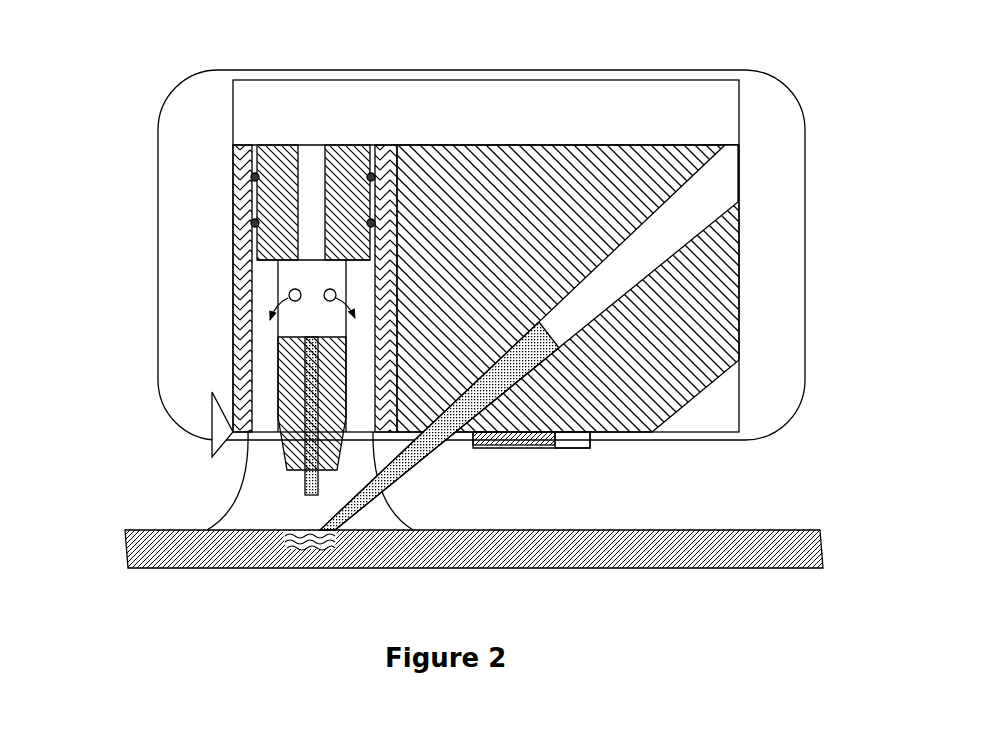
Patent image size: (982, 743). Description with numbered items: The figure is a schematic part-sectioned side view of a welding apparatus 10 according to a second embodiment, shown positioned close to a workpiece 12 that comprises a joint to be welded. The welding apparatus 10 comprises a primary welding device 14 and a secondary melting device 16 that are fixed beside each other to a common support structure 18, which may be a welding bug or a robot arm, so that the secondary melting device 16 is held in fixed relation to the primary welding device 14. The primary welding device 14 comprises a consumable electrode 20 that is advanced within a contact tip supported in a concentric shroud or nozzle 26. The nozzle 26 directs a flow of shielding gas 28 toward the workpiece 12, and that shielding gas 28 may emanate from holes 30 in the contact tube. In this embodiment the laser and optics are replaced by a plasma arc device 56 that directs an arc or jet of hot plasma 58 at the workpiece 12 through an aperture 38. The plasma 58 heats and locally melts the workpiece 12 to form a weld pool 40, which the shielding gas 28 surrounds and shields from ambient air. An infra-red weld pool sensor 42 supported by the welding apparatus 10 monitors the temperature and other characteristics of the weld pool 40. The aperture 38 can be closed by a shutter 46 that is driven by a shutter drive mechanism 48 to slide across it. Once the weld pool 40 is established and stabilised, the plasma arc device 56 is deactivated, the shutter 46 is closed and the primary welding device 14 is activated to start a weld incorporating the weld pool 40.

The welding apparatus 10 is at (122, 90).
The workpiece 12 is at (765, 530).
The primary welding device 14 is at (226, 193).
The secondary melting device 16 is at (755, 190).
The common support structure 18 is at (160, 335).
The consumable electrode 20 is at (302, 480).
The nozzle 26 is at (235, 325).
The shielding gas 28 is at (238, 508).
The holes 30 is at (300, 302).
The aperture 38 is at (460, 443).
The weld pool 40 is at (298, 548).
The infra-red weld pool sensor 42 is at (220, 393).
The shutter 46 is at (515, 442).
The shutter drive mechanism 48 is at (577, 445).
The plasma arc device 56 is at (587, 310).
The plasma 58 is at (397, 477).